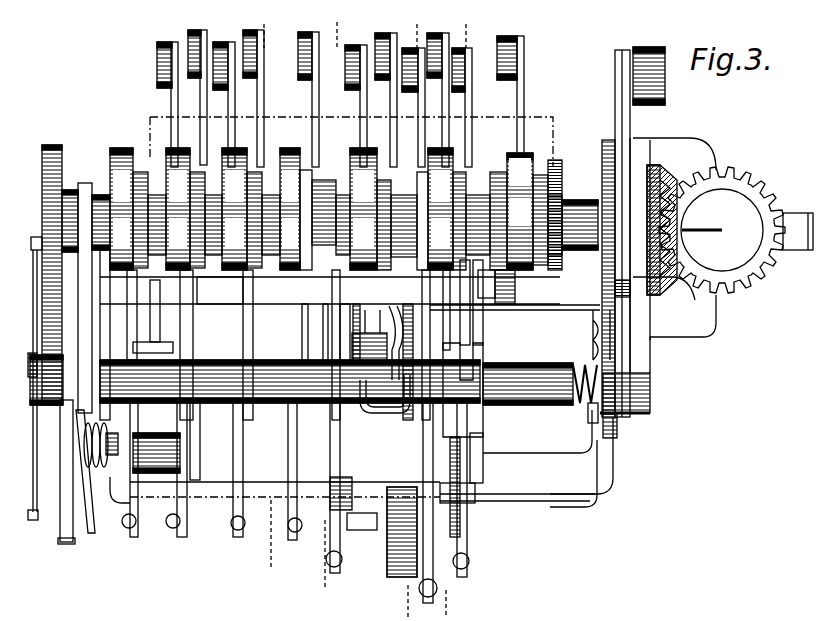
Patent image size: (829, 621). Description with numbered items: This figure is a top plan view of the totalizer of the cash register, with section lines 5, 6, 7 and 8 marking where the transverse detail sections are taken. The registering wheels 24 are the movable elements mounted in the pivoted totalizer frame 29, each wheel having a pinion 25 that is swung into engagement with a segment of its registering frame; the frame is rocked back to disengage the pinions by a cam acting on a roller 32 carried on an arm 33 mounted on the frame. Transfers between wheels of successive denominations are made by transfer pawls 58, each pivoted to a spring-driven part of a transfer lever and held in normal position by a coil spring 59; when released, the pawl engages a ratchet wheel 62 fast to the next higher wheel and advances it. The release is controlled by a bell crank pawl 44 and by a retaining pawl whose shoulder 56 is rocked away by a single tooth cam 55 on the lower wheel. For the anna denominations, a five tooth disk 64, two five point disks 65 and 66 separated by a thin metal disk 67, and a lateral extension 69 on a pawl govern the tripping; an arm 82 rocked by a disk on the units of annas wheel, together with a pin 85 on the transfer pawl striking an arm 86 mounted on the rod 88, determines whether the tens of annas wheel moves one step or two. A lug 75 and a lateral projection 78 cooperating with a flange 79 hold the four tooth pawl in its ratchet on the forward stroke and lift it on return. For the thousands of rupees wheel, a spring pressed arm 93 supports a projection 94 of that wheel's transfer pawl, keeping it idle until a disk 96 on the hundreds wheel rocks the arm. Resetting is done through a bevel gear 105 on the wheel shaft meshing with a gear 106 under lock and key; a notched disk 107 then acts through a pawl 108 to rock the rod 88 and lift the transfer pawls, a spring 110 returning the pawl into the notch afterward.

The section line 5— 5 is at (269, 301).
The section line 6— 6 is at (458, 312).
The section line 7— 7 is at (415, 312).
The section line 8— 8 is at (331, 307).
The registering wheel 24 is at (228, 150).
The pinion 25 is at (553, 200).
The totalizer frame 29 is at (548, 505).
The roller 32 is at (650, 47).
The arm 33 is at (618, 70).
The bell crank pawl 44 is at (156, 60).
The single tooth cam 55 is at (525, 285).
The shoulder 56 is at (285, 360).
The transfer pawl 58 is at (238, 530).
The coil spring 59 is at (170, 528).
The ratchet wheel 62 is at (536, 150).
The five tooth disk 64 is at (260, 42).
The five point disk 65 is at (370, 335).
The five point disk 66 is at (400, 340).
The thin metal disk 67 is at (392, 340).
The lateral extension 69 is at (463, 348).
The lug 75 is at (455, 495).
The lateral projection 78 is at (473, 440).
The flange 79 is at (470, 413).
The arm 82 is at (412, 330).
The pin 85 is at (362, 532).
The arm 86 is at (355, 455).
The rod 88 is at (593, 370).
The spring pressed arm 93 is at (155, 318).
The projection 94 is at (105, 449).
The disk 96 is at (135, 195).
The bevel gear 105 is at (663, 165).
The gear 106 is at (735, 178).
The disk 107 is at (633, 297).
The pawl 108 is at (633, 343).
The spring 110 is at (595, 420).